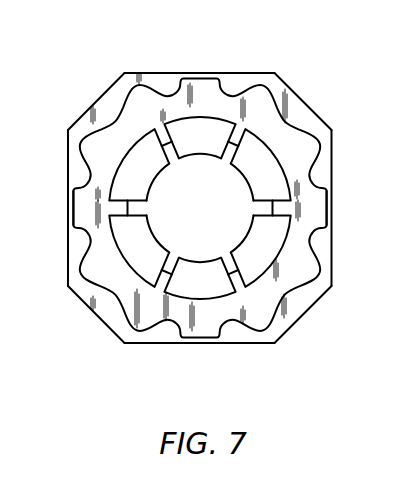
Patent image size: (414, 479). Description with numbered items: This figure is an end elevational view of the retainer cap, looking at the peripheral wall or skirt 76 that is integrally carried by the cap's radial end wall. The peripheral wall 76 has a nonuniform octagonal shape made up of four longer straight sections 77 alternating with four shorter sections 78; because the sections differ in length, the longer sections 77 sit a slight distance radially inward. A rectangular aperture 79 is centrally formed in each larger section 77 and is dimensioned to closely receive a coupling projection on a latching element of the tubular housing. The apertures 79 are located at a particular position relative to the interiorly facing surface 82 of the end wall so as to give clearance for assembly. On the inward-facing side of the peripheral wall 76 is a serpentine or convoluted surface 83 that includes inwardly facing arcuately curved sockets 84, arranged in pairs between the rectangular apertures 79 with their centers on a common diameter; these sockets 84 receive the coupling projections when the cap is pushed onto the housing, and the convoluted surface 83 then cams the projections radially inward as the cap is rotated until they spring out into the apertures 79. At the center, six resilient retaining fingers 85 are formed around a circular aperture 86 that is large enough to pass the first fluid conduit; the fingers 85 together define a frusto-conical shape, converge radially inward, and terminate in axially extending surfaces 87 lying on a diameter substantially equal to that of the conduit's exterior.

The peripheral wall 76 is at (209, 190).
The larger sections of peripheral wall 77 is at (67, 272).
The smaller sections of peripheral wall 78 is at (305, 103).
The rectangular aperture 79 is at (66, 237).
The interiorly facing surface 82 is at (203, 322).
The serpentine or convoluted surface 83 is at (115, 121).
The arcuately curved sockets 84 is at (98, 150).
The resilient retaining fingers 85 is at (273, 183).
The circular aperture 86 is at (238, 142).
The axially extending surfaces 87 is at (237, 173).